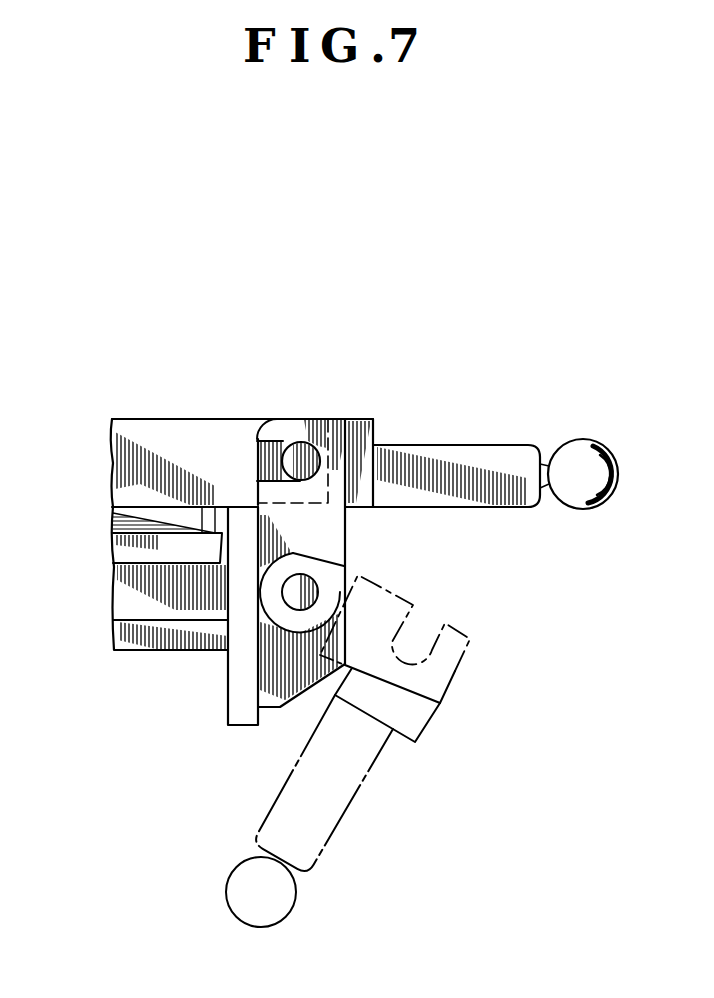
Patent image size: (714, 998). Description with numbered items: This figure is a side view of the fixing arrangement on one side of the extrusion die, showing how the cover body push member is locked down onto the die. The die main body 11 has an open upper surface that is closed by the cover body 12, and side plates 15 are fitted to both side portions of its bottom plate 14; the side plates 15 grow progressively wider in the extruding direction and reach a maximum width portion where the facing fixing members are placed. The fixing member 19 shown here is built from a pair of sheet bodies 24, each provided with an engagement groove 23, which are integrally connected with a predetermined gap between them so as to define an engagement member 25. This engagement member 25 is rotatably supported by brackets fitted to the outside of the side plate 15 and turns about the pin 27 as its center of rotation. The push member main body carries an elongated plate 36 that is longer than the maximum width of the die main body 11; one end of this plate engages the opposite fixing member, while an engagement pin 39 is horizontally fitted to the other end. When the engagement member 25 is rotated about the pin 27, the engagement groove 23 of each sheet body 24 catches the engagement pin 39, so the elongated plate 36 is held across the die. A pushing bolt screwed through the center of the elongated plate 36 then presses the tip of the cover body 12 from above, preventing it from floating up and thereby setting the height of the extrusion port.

The die main body 11 is at (196, 664).
The cover body 12 is at (116, 574).
The bottom plate 14 is at (141, 643).
The side plate 15 is at (237, 692).
The fixing member 19 is at (405, 433).
The engagement groove 23 is at (264, 462).
The sheet body 24 is at (330, 532).
The engagement member 25 is at (440, 704).
The pin 27 is at (313, 590).
The elongated plate 36 is at (150, 430).
The engagement pin 39 is at (305, 441).